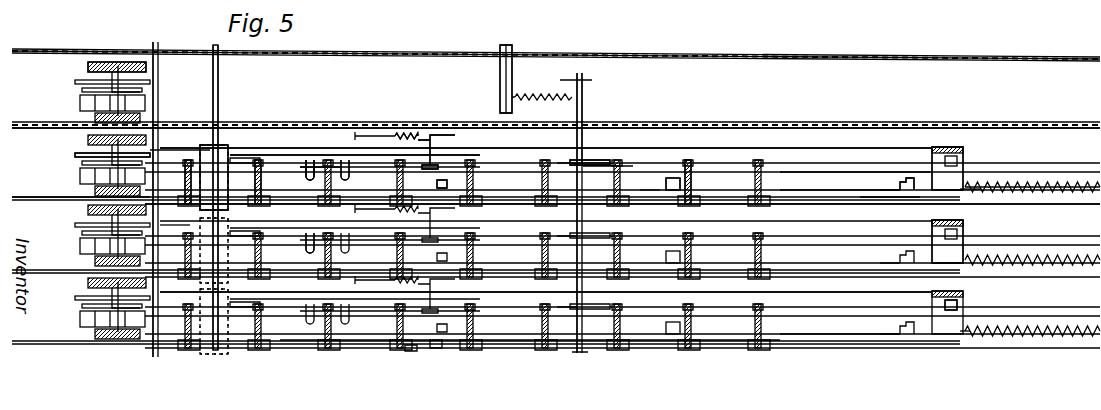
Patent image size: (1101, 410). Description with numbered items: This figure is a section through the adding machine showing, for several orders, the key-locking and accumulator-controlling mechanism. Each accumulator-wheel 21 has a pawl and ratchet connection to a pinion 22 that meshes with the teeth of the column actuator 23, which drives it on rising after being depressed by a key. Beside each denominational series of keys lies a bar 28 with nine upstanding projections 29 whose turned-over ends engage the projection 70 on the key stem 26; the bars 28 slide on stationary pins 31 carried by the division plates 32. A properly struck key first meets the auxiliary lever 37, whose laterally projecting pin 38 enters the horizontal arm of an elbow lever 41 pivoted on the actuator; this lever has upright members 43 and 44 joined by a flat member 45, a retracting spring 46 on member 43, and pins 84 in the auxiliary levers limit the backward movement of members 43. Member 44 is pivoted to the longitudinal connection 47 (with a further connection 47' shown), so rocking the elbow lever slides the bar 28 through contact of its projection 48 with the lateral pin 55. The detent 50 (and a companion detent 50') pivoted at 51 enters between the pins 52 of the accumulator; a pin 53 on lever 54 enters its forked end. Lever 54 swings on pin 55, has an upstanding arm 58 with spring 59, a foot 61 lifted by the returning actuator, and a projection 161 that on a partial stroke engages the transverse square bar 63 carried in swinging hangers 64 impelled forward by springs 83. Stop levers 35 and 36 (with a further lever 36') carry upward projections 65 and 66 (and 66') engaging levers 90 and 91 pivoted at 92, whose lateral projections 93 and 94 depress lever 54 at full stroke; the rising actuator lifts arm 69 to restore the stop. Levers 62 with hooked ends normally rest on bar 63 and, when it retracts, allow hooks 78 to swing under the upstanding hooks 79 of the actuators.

The accumulator-wheel 21 is at (83, 244).
The pinion 22 is at (101, 340).
The column actuator 23 is at (802, 350).
The stem 26 is at (175, 222).
The bar 28 is at (370, 346).
The upstanding projections 29 is at (548, 346).
The pins 31 is at (712, 348).
The division plates 32 is at (841, 347).
The stop lever 35 is at (826, 172).
The stop lever 36 is at (840, 324).
The link 36' is at (840, 181).
The auxiliary lever 37 is at (188, 245).
The laterally projecting pin 38 is at (895, 338).
The elbow lever 41 is at (934, 339).
The upright member 43 is at (960, 337).
The upright member 44 is at (964, 295).
The flat member 45 is at (958, 301).
The retracting spring 46 is at (1071, 337).
The longitudinal connection 47 is at (546, 214).
The bar 47' is at (546, 300).
The projection 48 is at (414, 350).
The detent 50 is at (111, 228).
The gear 50' is at (180, 155).
The stationary pivot 51 is at (153, 350).
The pins 52 is at (85, 318).
The pin 53 is at (298, 152).
The lever 54 is at (453, 141).
The pin 55 is at (440, 348).
The upstanding arm 58 is at (394, 130).
The spring 59 is at (417, 132).
The foot 61 is at (584, 306).
The levers 62 is at (612, 294).
The transverse square bar 63 is at (583, 120).
The swinging hangers 64 is at (580, 350).
The upward projection 65 is at (352, 164).
The upward projection 66 is at (296, 245).
The hanger 66' is at (293, 243).
The arm 69 is at (460, 348).
The projection 70 is at (757, 350).
The hook 78 is at (672, 245).
The upstanding hook 79 is at (636, 347).
The springs 83 is at (525, 94).
The pins 84 is at (966, 329).
The lever 90 is at (220, 355).
The lever 91 is at (230, 142).
The pivot 92 is at (213, 45).
The lateral projection 93 is at (342, 155).
The lateral projection 94 is at (315, 152).
The projection 161 is at (585, 305).